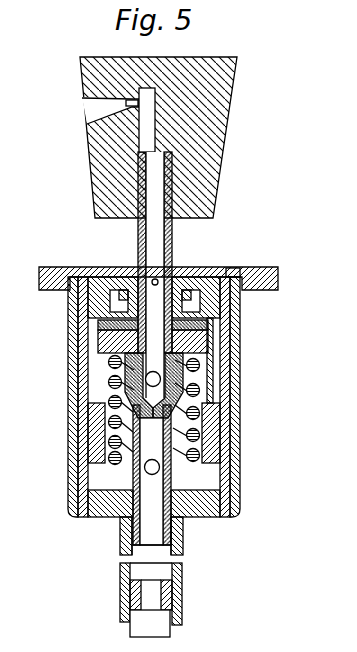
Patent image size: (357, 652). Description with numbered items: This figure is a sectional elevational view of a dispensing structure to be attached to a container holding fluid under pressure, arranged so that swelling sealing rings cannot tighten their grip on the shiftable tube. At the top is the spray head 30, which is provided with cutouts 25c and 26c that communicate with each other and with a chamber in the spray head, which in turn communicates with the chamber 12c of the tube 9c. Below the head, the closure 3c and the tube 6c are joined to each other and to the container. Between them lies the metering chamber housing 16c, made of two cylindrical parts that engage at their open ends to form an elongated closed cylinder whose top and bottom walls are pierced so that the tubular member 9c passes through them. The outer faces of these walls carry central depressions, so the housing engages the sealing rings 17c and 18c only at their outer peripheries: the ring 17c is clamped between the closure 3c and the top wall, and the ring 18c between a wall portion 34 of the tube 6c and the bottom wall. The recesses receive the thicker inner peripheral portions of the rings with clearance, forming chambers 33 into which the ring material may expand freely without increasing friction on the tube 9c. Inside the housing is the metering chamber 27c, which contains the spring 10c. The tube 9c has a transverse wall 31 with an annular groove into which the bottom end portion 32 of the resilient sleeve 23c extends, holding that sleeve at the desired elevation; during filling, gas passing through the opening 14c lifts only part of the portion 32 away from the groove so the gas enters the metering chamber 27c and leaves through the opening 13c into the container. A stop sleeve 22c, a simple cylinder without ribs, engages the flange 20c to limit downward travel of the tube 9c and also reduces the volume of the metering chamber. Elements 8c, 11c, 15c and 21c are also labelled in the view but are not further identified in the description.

The closure 3c is at (278, 270).
The tube 6c is at (120, 600).
The outlet tube 8c is at (172, 605).
The tube 9c is at (172, 190).
The spring 10c is at (168, 454).
The lower ball 11c is at (157, 470).
The chamber 12c is at (162, 166).
The opening 13c is at (210, 518).
The opening 14c is at (160, 381).
The pin 15c is at (158, 280).
The metering chamber housing 16c is at (88, 298).
The sealing ring 17c is at (233, 272).
The sealing ring 18c is at (116, 518).
The flange 20c is at (212, 340).
The seal 21c is at (210, 325).
The stop sleeve 22c is at (214, 430).
The resilient sleeve 23c is at (199, 366).
The cutout 25c is at (130, 106).
The cutout 26c is at (95, 103).
The metering chamber 27c is at (108, 393).
The spray head 30 is at (215, 103).
The transverse wall 31 is at (204, 436).
The bottom end portion 32 is at (204, 407).
The chamber 33 is at (203, 312).
The wall portion 34 is at (95, 518).